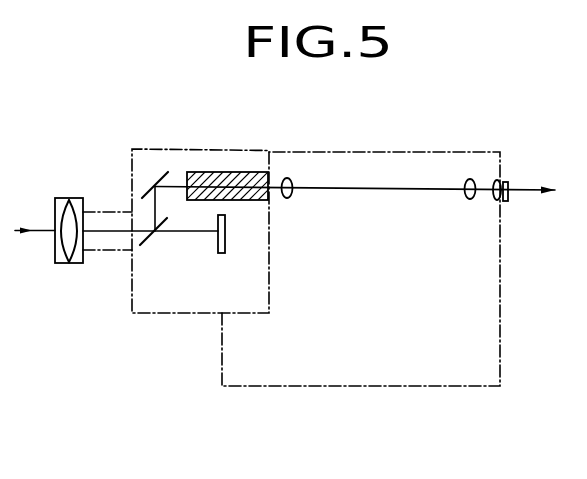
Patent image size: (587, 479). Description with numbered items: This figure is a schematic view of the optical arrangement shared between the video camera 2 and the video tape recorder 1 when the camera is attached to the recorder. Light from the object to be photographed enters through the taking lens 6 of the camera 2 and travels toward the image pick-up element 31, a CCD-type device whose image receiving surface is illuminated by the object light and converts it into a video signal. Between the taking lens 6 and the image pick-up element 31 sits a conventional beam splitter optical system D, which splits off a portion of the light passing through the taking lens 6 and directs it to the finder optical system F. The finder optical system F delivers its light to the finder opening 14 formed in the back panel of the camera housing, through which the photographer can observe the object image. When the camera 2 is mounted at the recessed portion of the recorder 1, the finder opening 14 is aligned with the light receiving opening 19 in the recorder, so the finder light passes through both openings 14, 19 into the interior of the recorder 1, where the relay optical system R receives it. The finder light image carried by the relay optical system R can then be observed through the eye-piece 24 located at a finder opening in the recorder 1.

The video tape recorder 1 is at (357, 387).
The video camera 2 is at (160, 149).
The taking lens 6 is at (65, 250).
The beam splitter optical system D is at (156, 237).
The finder optical system F is at (224, 172).
The finder opening 14 is at (302, 150).
The light receiving opening 19 is at (280, 190).
The relay optical system R is at (465, 197).
The eye-piece 24 is at (505, 182).
The image pick-up element 31 is at (220, 254).